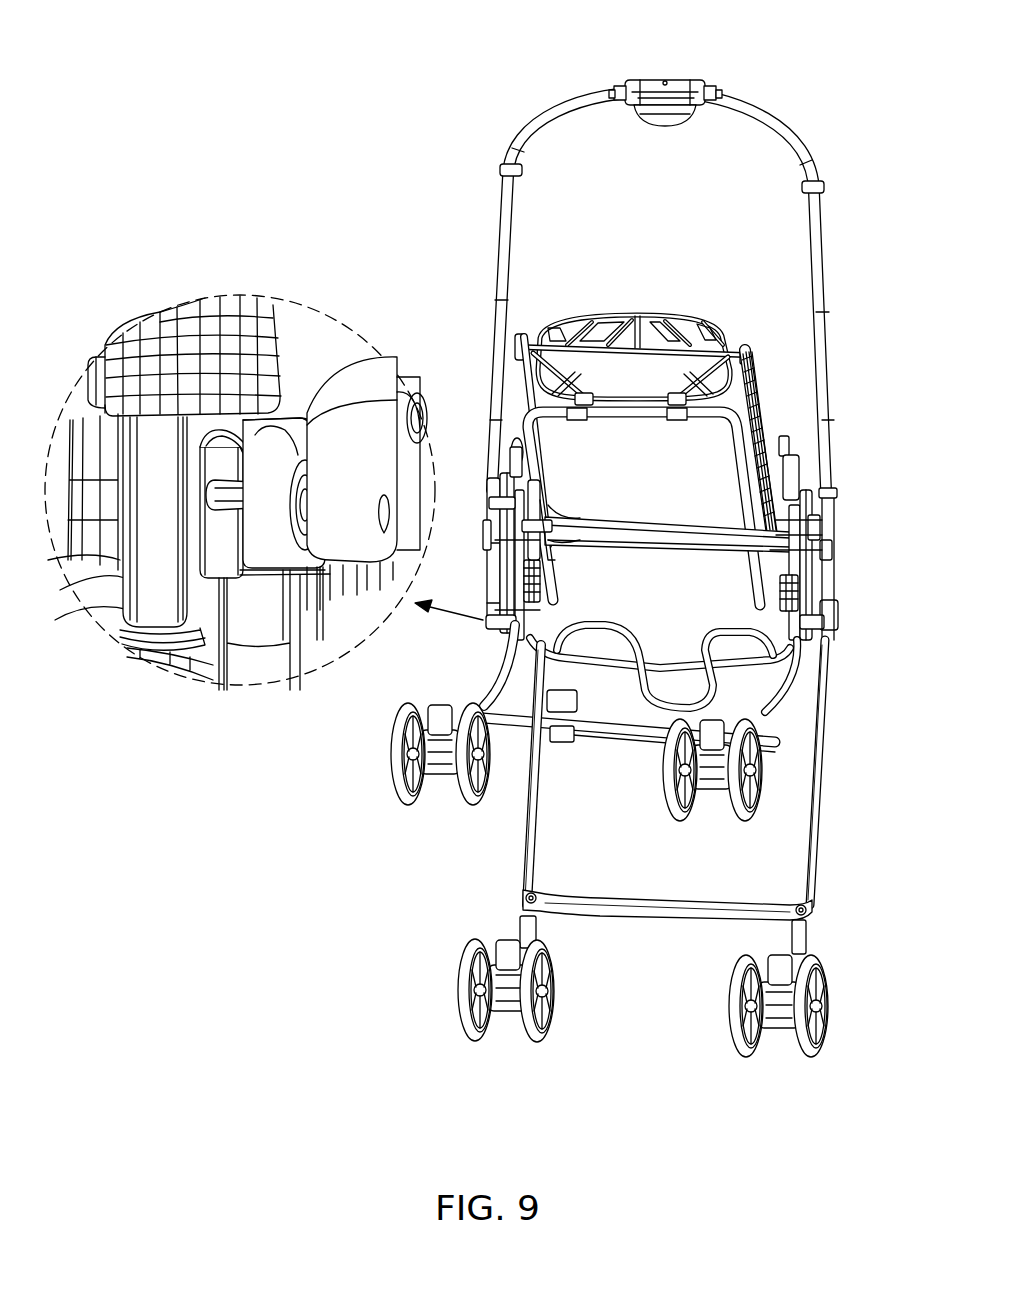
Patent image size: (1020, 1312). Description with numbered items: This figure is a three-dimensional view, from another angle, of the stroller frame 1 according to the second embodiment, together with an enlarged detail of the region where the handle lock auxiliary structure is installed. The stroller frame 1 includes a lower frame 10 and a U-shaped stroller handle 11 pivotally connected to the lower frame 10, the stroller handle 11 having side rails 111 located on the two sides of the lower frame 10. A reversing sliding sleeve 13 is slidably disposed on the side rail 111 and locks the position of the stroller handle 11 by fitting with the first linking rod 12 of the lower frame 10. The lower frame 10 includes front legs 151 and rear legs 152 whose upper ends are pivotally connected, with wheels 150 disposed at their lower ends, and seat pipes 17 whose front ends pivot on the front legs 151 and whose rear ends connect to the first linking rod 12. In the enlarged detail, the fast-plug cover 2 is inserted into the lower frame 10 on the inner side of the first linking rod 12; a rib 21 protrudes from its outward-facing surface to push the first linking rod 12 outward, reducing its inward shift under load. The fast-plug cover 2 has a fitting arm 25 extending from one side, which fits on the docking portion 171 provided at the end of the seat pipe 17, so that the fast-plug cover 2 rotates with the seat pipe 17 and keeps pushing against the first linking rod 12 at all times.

The stroller frame 1 is at (94, 31).
The lower frame 10 is at (462, 840).
The stroller handle 11 is at (694, 285).
The side rail 111 is at (508, 258).
The reversing sliding sleeve 13 is at (838, 500).
The wheel 150 is at (553, 1015).
The front leg 151 is at (488, 700).
The rear leg 152 is at (815, 856).
The seat pipe 17 is at (252, 514).
The docking portion 171 is at (290, 432).
The fast-plug cover 2 is at (237, 463).
The rib 21 is at (198, 440).
The fitting arm 25 is at (267, 497).
The first linking rod 12 is at (150, 577).